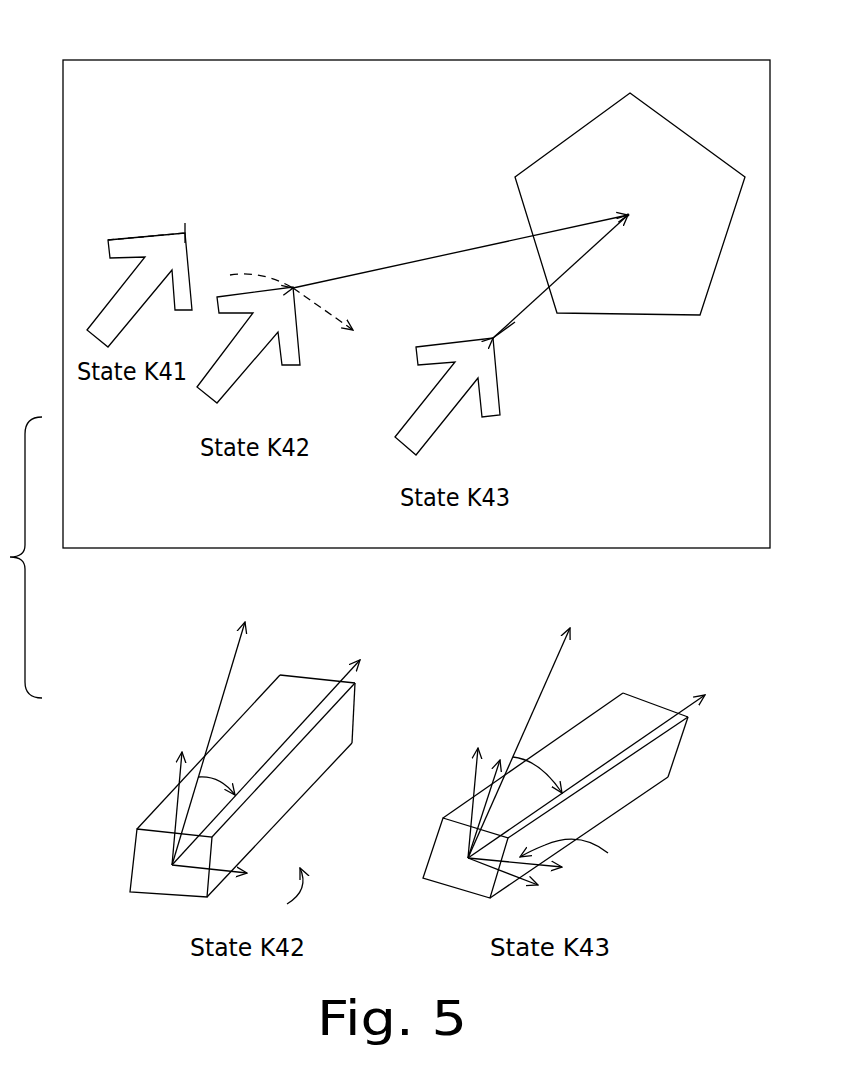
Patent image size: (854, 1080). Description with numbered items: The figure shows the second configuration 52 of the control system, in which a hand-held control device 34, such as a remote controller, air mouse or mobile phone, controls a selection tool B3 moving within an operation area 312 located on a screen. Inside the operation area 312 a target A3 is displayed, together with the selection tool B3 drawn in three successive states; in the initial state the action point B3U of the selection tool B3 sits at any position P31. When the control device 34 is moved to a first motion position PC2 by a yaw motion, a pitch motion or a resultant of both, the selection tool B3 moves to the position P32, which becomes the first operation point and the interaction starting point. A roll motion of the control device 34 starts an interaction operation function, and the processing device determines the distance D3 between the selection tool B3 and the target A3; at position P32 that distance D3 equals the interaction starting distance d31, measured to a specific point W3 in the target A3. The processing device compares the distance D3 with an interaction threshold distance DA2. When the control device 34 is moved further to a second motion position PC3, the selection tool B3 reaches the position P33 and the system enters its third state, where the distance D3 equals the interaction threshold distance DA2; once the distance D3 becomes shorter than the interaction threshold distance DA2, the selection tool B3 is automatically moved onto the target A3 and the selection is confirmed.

The operation area 312 is at (337, 61).
The second configuration 52 is at (493, 46).
The control device 34 is at (302, 675).
The selection tool B3 is at (108, 302).
The action point B3U is at (174, 234).
The position P31 is at (162, 221).
The position P32 is at (291, 292).
The position P33 is at (470, 326).
The distance D3 is at (460, 251).
The distance d31 is at (555, 276).
The interaction threshold distance DA2 is at (524, 335).
The target A3 is at (565, 140).
The target point W3 is at (645, 219).
The first motion position PC2 is at (278, 750).
The second motion position PC3 is at (596, 757).